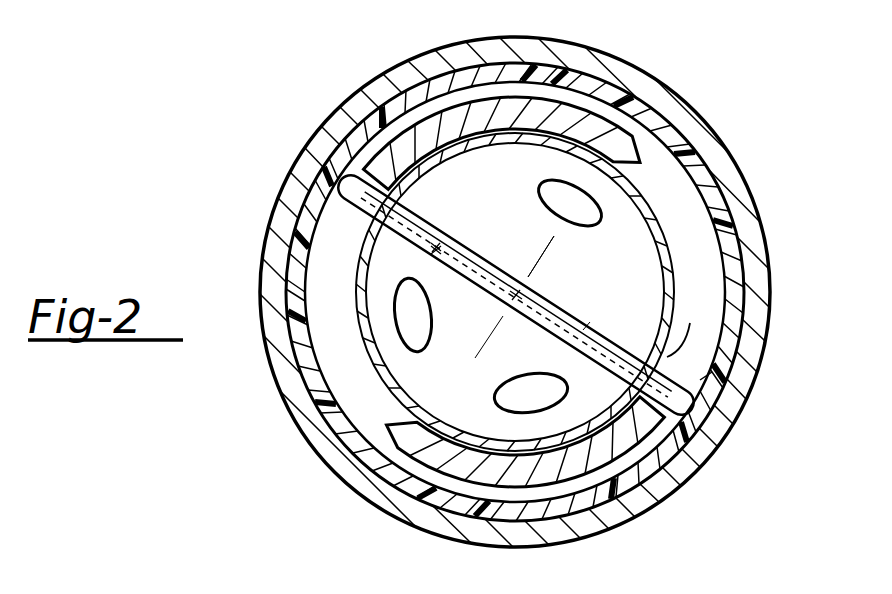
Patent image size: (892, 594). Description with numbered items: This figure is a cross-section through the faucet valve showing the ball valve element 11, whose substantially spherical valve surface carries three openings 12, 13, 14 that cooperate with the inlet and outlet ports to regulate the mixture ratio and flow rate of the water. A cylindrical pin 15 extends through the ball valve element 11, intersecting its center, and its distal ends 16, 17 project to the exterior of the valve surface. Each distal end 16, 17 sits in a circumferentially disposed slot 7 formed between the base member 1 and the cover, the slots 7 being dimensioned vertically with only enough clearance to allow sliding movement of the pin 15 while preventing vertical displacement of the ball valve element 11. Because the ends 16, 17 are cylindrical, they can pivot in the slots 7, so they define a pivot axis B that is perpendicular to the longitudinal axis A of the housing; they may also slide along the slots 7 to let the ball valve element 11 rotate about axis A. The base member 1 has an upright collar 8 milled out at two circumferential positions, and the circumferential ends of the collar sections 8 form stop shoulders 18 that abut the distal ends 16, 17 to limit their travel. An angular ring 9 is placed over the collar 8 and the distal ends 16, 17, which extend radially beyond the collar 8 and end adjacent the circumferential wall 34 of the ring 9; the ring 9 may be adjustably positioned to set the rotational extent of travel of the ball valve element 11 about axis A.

The base member 1 is at (512, 47).
The circumferential slot 7 is at (707, 263).
The upright collar 8 is at (647, 100).
The angular ring 9 is at (383, 78).
The ball valve element 11 is at (695, 323).
The opening 12 is at (415, 318).
The opening 13 is at (497, 398).
The opening 14 is at (548, 204).
The cylindrical pin 15 is at (433, 253).
The distal end 16 is at (340, 173).
The distal end 17 is at (693, 387).
The stop shoulder 18 is at (690, 160).
The circumferential wall 34 is at (447, 57).
The longitudinal axis A is at (530, 287).
The pivot axis B is at (583, 330).